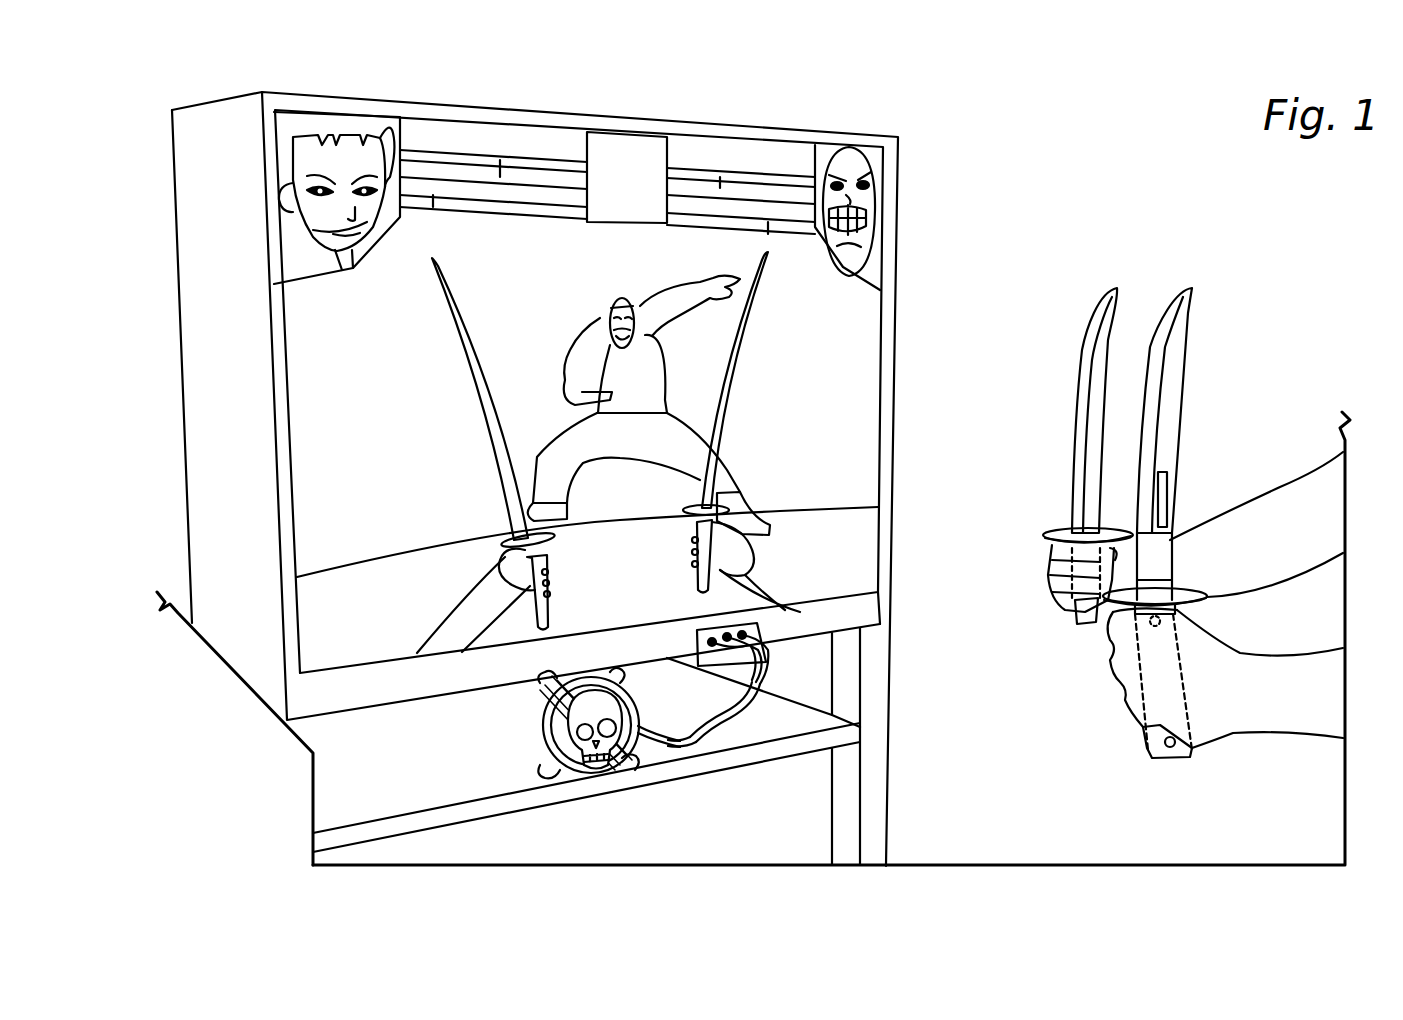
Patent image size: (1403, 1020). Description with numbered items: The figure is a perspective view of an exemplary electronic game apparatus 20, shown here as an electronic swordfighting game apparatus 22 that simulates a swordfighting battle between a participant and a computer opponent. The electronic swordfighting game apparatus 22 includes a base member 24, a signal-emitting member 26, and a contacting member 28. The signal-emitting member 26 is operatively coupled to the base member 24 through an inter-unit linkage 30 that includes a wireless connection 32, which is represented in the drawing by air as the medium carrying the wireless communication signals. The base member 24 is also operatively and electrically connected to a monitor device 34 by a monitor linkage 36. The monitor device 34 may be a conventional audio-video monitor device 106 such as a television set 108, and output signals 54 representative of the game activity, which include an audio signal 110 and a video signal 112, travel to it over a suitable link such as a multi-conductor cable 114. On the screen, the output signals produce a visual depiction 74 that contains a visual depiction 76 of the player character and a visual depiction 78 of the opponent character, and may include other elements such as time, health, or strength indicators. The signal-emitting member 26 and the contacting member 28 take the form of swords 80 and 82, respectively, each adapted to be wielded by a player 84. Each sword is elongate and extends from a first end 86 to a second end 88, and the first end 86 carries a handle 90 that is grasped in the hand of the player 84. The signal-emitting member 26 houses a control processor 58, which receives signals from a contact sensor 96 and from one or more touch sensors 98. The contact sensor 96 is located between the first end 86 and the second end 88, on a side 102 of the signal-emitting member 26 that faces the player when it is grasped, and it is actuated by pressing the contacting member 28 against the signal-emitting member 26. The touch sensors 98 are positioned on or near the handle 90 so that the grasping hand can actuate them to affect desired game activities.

The electronic game apparatus 20 is at (975, 182).
The electronic swordfighting game apparatus 22 is at (1017, 222).
The base member 24 is at (541, 723).
The signal-emitting member 26 is at (1186, 314).
The contacting member 28 is at (1090, 325).
The inter-unit linkage 30 is at (914, 725).
The wireless connection 32 is at (918, 777).
The monitor device 34 is at (482, 112).
The monitor linkage 36 is at (716, 721).
The output signals 54 is at (690, 745).
The control processor 58 is at (1165, 566).
The visual depiction 74 is at (852, 365).
The visual depiction of the player character 76 is at (446, 630).
The visual depiction of the opponent character 78 is at (606, 318).
The sword 80 is at (1178, 351).
The sword 82 is at (1084, 372).
The player 84 is at (1297, 727).
The first end 86 is at (1135, 740).
The second end 88 is at (1157, 298).
The handle 90 is at (1065, 568).
The contact sensor 96 is at (1166, 497).
The touch sensors 98 is at (1176, 640).
The side 102 is at (1190, 378).
The audio-video monitor device 106 is at (686, 126).
The television set 108 is at (786, 130).
The audio signal 110 is at (703, 717).
The video signal 112 is at (737, 710).
The multi-conductor cable 114 is at (656, 728).